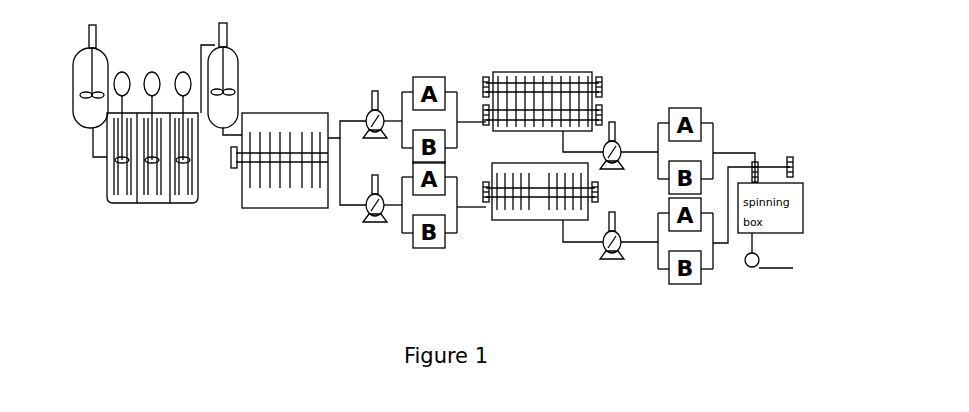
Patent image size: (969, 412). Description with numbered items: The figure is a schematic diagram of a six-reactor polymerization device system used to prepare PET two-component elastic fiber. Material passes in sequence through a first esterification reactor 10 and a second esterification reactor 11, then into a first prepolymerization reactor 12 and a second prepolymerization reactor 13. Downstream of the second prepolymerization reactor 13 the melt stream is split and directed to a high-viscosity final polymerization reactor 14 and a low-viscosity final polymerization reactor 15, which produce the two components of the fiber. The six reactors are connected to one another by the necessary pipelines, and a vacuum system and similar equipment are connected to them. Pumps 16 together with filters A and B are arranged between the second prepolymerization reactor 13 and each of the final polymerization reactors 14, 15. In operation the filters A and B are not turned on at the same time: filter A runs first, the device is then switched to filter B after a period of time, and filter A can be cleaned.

The first esterification reactor 10 is at (80, 118).
The second esterification reactor 11 is at (152, 207).
The first prepolymerization reactor 12 is at (235, 60).
The second prepolymerization reactor 13 is at (278, 200).
The high-viscosity final polymerization reactor 14 is at (575, 72).
The low-viscosity final polymerization reactor 15 is at (518, 210).
The pump 16 is at (373, 117).